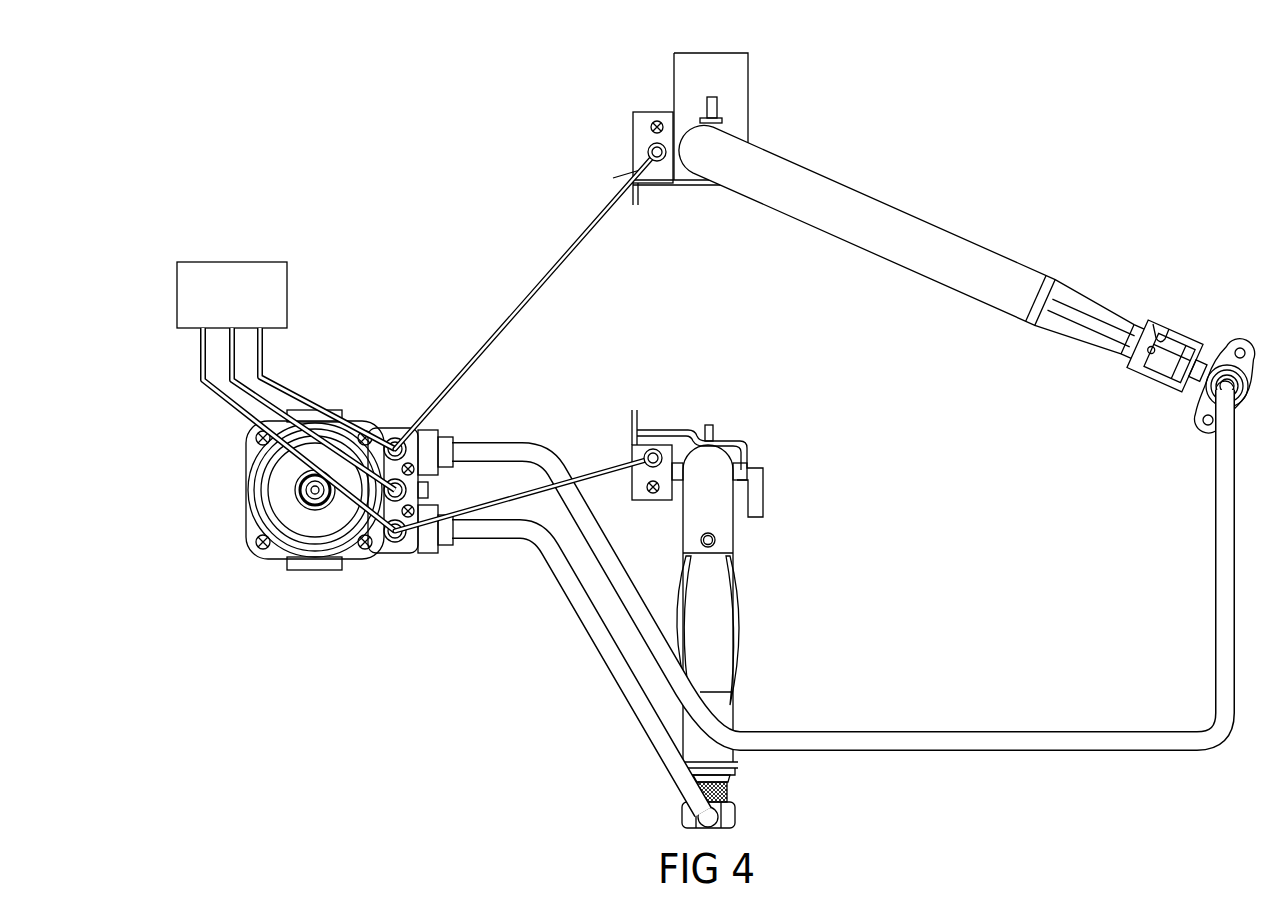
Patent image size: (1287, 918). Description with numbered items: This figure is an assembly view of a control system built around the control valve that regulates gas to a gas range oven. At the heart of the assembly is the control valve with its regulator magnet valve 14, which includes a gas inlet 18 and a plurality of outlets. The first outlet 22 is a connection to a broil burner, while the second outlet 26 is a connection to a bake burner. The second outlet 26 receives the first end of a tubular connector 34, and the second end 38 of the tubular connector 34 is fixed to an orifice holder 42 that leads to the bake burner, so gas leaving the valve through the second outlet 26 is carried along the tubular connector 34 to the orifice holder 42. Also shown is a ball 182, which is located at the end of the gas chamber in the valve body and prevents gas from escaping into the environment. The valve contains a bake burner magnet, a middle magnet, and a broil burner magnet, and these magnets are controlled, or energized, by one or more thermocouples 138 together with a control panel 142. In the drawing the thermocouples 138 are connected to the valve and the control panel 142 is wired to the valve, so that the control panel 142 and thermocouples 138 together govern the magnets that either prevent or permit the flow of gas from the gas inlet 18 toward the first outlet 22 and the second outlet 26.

The regulator magnet valve 14 is at (235, 518).
The gas inlet 18 is at (331, 410).
The first outlet 22 is at (437, 428).
The second outlet 26 is at (440, 543).
The tubular connector 34 is at (604, 649).
The second end 38 is at (697, 825).
The orifice holder 42 is at (729, 792).
The thermocouple 138 is at (660, 162).
The control panel 142 is at (248, 305).
The ball 182 is at (420, 489).